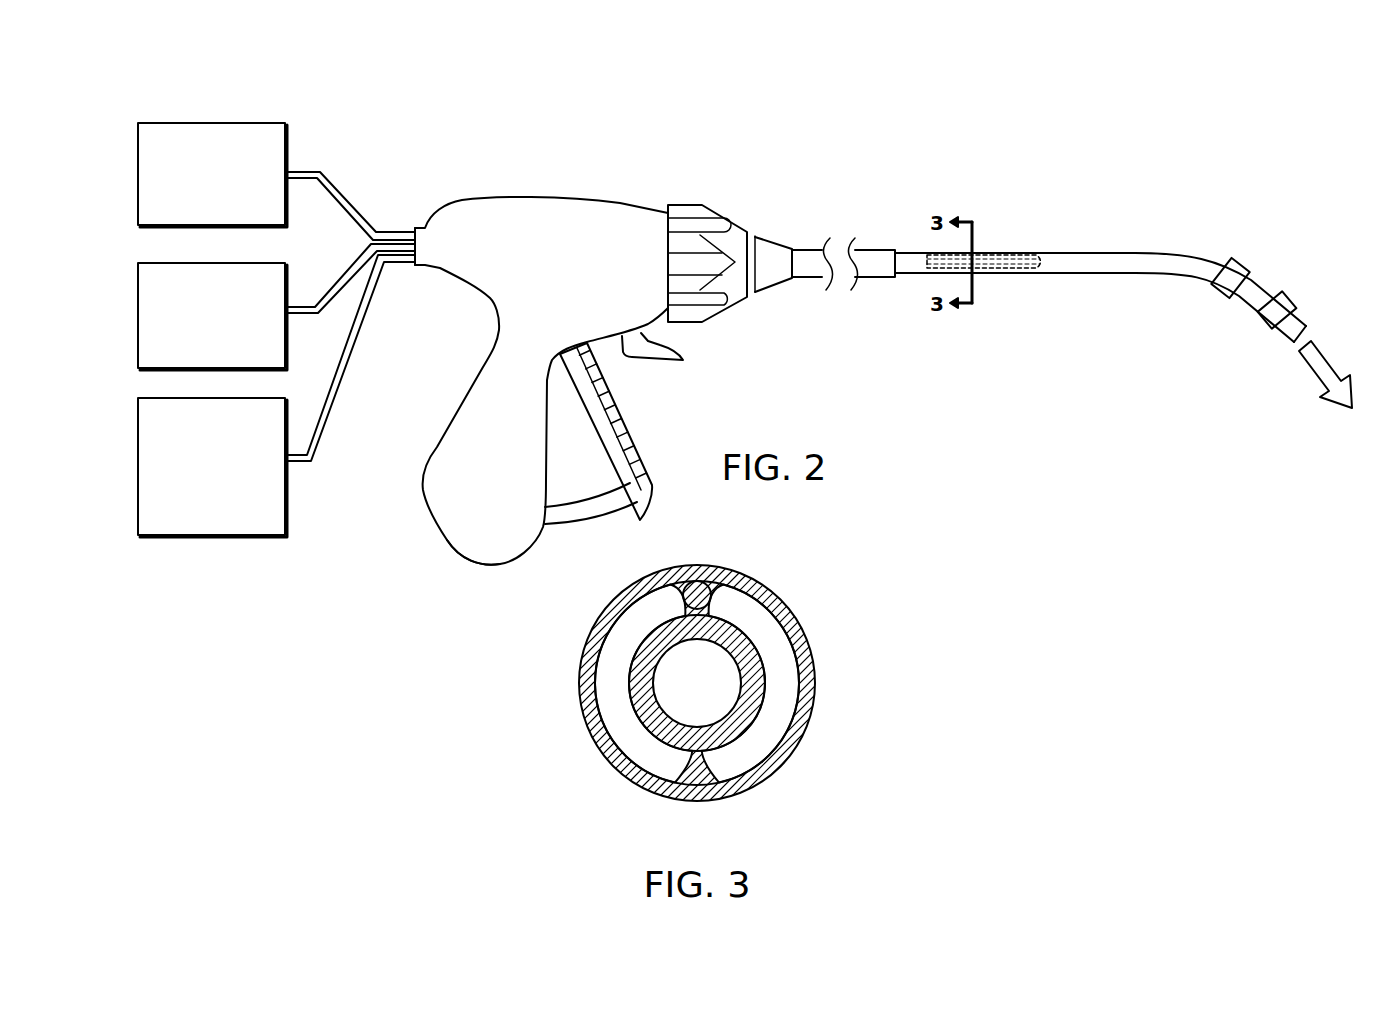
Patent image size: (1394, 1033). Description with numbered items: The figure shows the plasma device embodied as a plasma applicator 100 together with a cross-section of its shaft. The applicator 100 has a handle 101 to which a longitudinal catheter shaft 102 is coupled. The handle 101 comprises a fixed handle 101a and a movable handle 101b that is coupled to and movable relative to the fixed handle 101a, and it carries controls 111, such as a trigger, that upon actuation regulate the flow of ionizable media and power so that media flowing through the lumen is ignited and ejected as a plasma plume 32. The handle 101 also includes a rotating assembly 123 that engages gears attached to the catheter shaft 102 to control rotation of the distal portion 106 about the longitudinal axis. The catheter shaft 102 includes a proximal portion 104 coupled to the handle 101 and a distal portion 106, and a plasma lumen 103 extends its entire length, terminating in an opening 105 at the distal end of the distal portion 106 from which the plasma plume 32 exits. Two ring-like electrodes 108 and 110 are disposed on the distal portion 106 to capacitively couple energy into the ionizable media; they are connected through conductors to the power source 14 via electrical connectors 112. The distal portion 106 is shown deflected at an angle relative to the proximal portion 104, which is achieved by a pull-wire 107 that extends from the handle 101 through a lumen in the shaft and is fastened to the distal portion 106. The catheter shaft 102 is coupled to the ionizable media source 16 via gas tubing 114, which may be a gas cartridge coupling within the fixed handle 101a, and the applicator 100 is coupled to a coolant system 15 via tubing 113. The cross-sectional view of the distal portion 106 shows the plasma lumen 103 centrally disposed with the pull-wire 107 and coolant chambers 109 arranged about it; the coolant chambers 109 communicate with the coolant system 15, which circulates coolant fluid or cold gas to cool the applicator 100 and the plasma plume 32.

In FIG. 2, the plasma applicator 100 is at (749, 136).
In FIG. 2, the handle 101 is at (518, 279).
In FIG. 2, the fixed handle 101a is at (497, 568).
In FIG. 2, the movable handle 101b is at (653, 506).
In FIG. 2, the catheter shaft 102 is at (925, 222).
In FIG. 2, the plasma lumen 103 is at (1000, 256).
In FIG. 3, the plasma lumen 103 is at (680, 694).
In FIG. 2, the proximal portion 104 is at (805, 249).
In FIG. 2, the opening 105 is at (1298, 345).
In FIG. 2, the distal portion 106 is at (1088, 253).
In FIG. 3, the distal portion 106 is at (820, 690).
In FIG. 3, the pull-wire 107 is at (697, 580).
In FIG. 2, the electrode 108 is at (1250, 262).
In FIG. 3, the coolant chambers 109 is at (716, 765).
In FIG. 2, the electrode 110 is at (1262, 322).
In FIG. 2, the controls 111 is at (684, 362).
In FIG. 2, the electrical connectors 112 is at (333, 286).
In FIG. 2, the tubing 113 is at (344, 192).
In FIG. 2, the gas tubing 114 is at (346, 380).
In FIG. 2, the rotating assembly 123 is at (683, 203).
In FIG. 2, the power source 14 is at (198, 353).
In FIG. 2, the coolant system 15 is at (198, 212).
In FIG. 2, the ionizable media source 16 is at (198, 517).
In FIG. 2, the plasma plume 32 is at (1330, 352).